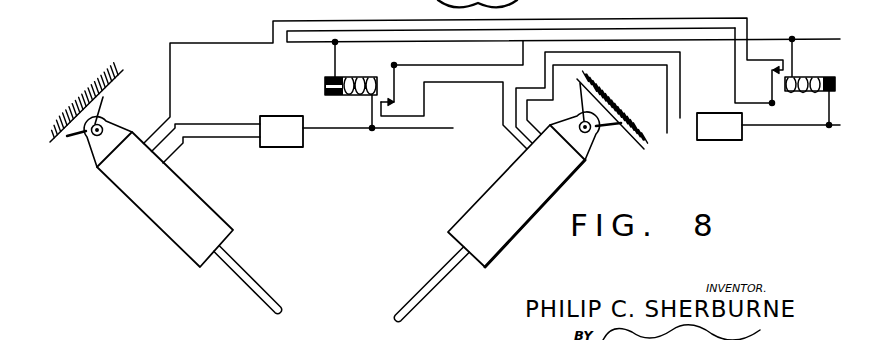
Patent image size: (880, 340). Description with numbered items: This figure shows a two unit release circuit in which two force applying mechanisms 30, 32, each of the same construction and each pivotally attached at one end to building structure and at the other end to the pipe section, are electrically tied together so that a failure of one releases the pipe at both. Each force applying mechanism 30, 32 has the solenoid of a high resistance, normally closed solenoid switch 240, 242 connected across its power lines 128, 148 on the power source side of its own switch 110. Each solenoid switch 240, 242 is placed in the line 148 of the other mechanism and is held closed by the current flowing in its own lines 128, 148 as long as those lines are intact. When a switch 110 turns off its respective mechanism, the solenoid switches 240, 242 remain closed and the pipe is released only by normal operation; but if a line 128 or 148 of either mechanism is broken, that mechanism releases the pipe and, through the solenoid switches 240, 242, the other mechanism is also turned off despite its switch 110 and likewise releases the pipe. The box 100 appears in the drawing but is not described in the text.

The force applying mechanism 30 is at (495, 195).
The force applying mechanism 32 is at (172, 222).
The control valve 100 is at (718, 137).
The switch 110 is at (288, 137).
The wire 128 is at (422, 130).
The wire 148 is at (430, 41).
The solenoid switch 240 is at (823, 77).
The solenoid switch 242 is at (325, 83).